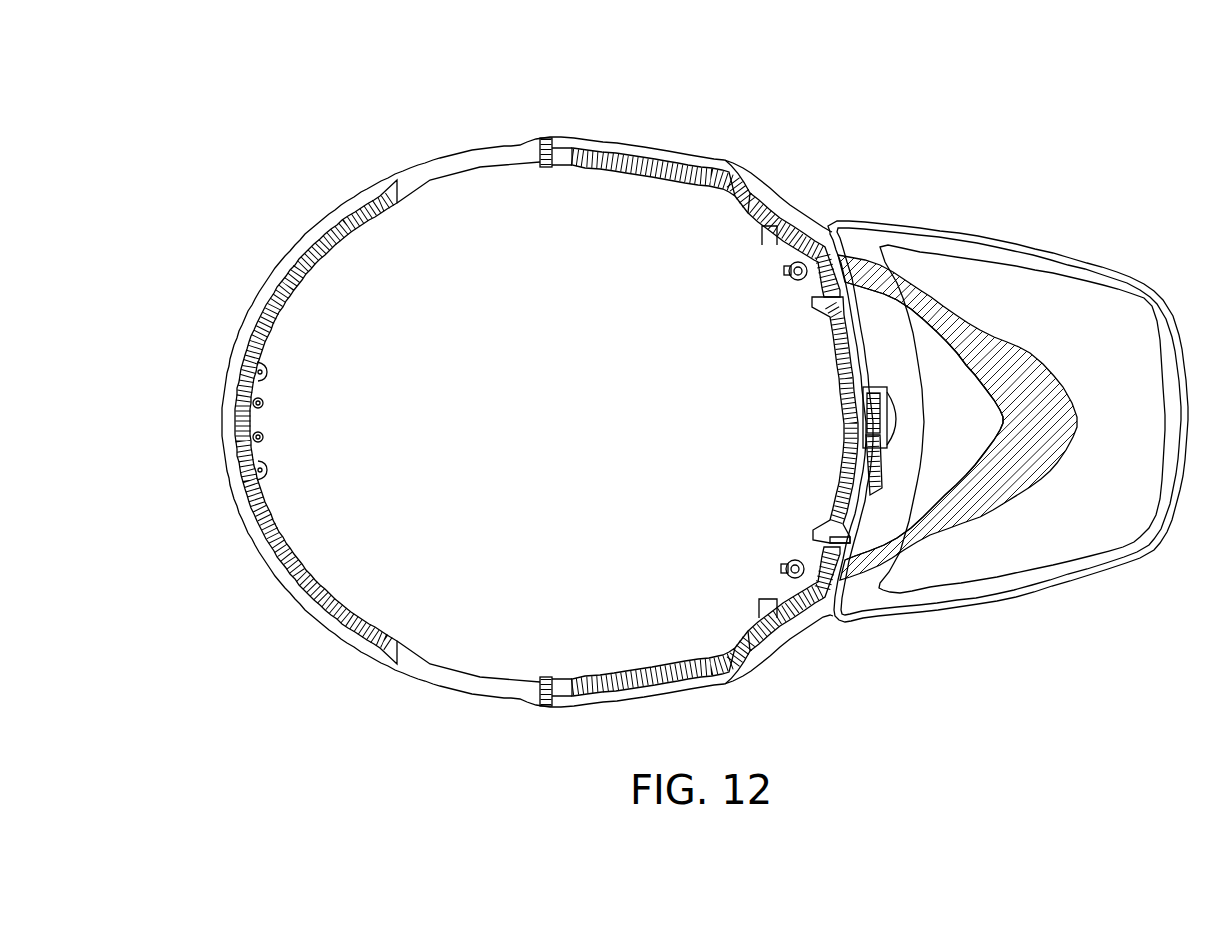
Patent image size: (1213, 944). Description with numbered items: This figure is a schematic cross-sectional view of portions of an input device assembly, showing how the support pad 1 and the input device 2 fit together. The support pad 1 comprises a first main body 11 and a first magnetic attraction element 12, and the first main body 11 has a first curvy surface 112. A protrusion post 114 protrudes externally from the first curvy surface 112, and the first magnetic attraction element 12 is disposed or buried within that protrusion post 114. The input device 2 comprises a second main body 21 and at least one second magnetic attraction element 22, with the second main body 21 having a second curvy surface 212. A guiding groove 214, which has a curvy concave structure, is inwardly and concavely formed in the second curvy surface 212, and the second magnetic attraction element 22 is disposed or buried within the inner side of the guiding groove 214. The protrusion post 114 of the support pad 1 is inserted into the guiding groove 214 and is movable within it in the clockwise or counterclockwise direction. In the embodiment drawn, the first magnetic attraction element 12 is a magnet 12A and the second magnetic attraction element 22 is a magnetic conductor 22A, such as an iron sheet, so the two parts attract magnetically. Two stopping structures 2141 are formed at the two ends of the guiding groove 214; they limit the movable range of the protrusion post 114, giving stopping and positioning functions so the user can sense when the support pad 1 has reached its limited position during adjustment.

The support pad 1 is at (1002, 240).
The first main body 11 is at (870, 237).
The first magnetic attraction element 12 is at (960, 417).
The magnet 12A is at (876, 418).
The first curvy surface 112 is at (870, 392).
The protrusion post 114 is at (907, 520).
The input device 2 is at (630, 137).
The second main body 21 is at (670, 152).
The second curvy surface 212 is at (840, 297).
The second magnetic attraction element 22 is at (786, 420).
The magnetic conductor 22A is at (853, 413).
The guiding groove 214 is at (863, 485).
The stopping structures 2141 is at (847, 533).